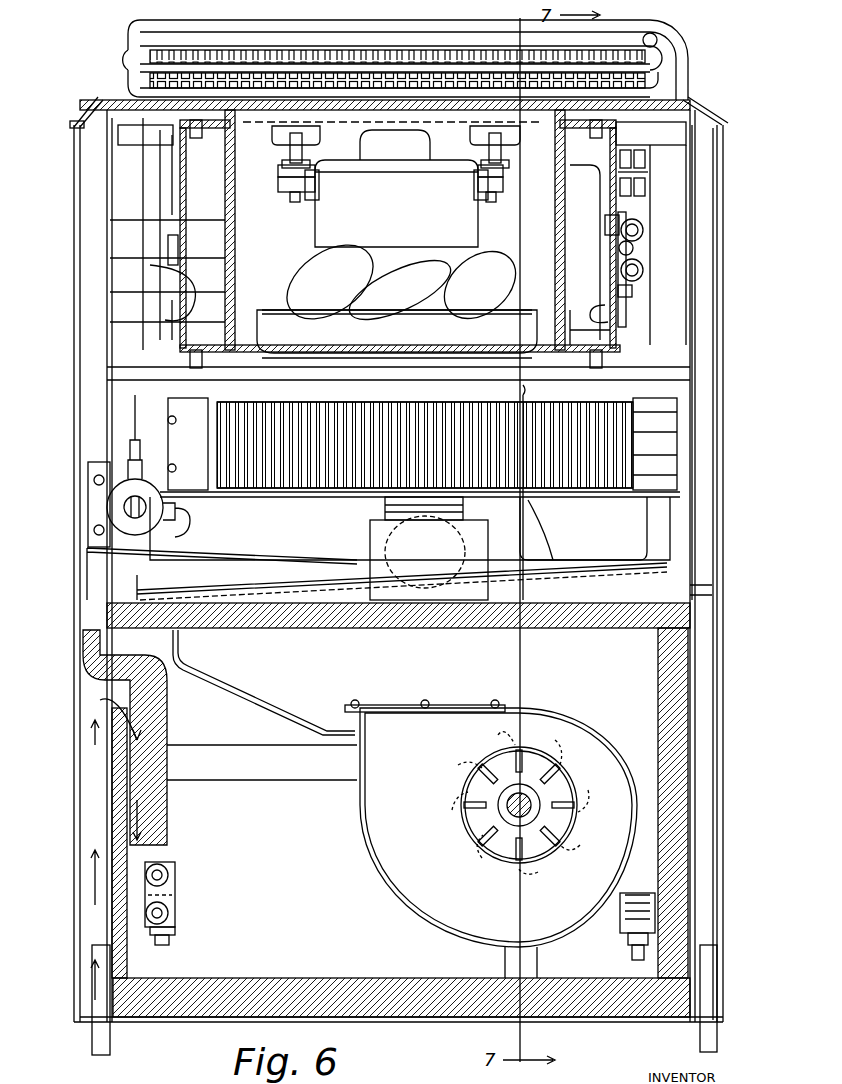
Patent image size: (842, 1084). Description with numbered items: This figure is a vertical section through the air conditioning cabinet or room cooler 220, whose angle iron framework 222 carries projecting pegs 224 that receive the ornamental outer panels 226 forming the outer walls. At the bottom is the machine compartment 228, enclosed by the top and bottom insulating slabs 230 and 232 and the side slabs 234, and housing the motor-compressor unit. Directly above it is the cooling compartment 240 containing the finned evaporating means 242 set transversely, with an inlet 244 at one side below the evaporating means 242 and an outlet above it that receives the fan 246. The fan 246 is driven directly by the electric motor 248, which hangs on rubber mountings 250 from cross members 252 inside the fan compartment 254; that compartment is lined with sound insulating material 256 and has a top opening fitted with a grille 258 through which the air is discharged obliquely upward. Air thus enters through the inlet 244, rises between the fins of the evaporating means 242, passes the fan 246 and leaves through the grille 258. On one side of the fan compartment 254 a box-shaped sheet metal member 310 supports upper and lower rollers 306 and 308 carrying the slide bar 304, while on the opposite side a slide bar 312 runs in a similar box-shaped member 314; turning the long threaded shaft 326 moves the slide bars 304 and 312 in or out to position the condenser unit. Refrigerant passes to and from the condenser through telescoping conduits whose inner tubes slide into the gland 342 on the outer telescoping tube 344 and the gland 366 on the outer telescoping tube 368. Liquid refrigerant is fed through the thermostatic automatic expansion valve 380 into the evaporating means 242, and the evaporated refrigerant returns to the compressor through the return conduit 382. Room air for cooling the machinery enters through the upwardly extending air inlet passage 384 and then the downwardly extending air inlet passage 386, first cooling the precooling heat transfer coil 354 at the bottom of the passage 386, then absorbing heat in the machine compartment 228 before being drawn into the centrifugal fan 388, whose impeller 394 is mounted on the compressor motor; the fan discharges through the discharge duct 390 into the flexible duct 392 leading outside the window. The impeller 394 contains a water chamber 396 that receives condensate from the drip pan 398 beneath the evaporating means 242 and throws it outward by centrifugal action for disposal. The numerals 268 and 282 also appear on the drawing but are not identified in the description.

The air conditioning cabinet 220 is at (720, 800).
The angle iron framework 222 is at (694, 530).
The projecting pegs 224 is at (703, 590).
The ornamental outer panels 226 is at (708, 692).
The machine compartment 228 is at (295, 838).
The insulating slab 230 is at (268, 626).
The insulating slab 232 is at (322, 982).
The side slabs 234 is at (660, 682).
The cooling compartment 240 is at (410, 528).
The finned evaporating means 242 is at (395, 425).
The inlet 244 is at (600, 542).
The fan 246 is at (320, 338).
The electric motor 248 is at (405, 218).
The rubber mountings 250 is at (505, 188).
The cross members 252 is at (275, 140).
The fan compartment 254 is at (292, 243).
The sound insulating material 256 is at (560, 240).
The grille 258 is at (508, 138).
The condenser tubes 268 is at (142, 82).
The condenser fins 282 is at (130, 42).
The slide bar 304 is at (625, 225).
The upper roller 306 is at (612, 215).
The lower roller 308 is at (620, 325).
The box-shaped sheet metal member 310 is at (622, 310).
The slide bar 312 is at (185, 262).
The box-shaped sheet metal member 314 is at (185, 315).
The threaded shaft 326 is at (634, 250).
The gland 342 is at (645, 233).
The outer telescoping tube 344 is at (640, 232).
The precooling heat transfer coil 354 is at (169, 882).
The gland 366 is at (638, 285).
The outer telescoping tube 368 is at (645, 270).
The thermostatic automatic expansion valve 380 is at (110, 507).
The return conduit 382 is at (538, 522).
The upwardly extending air inlet passage 384 is at (97, 820).
The downwardly extending air inlet passage 386 is at (157, 815).
The centrifugal fan 388 is at (405, 862).
The discharge duct 390 is at (385, 668).
The flexible duct 392 is at (385, 507).
The impeller 394 is at (487, 792).
The water chamber 396 is at (185, 228).
The drip pan 398 is at (185, 296).